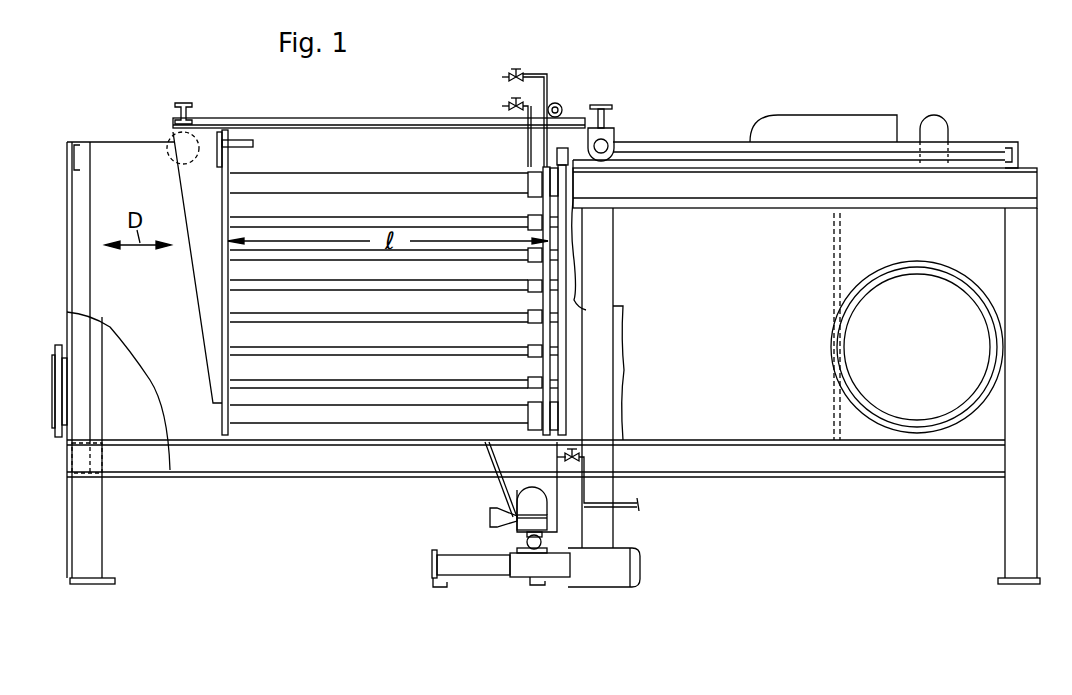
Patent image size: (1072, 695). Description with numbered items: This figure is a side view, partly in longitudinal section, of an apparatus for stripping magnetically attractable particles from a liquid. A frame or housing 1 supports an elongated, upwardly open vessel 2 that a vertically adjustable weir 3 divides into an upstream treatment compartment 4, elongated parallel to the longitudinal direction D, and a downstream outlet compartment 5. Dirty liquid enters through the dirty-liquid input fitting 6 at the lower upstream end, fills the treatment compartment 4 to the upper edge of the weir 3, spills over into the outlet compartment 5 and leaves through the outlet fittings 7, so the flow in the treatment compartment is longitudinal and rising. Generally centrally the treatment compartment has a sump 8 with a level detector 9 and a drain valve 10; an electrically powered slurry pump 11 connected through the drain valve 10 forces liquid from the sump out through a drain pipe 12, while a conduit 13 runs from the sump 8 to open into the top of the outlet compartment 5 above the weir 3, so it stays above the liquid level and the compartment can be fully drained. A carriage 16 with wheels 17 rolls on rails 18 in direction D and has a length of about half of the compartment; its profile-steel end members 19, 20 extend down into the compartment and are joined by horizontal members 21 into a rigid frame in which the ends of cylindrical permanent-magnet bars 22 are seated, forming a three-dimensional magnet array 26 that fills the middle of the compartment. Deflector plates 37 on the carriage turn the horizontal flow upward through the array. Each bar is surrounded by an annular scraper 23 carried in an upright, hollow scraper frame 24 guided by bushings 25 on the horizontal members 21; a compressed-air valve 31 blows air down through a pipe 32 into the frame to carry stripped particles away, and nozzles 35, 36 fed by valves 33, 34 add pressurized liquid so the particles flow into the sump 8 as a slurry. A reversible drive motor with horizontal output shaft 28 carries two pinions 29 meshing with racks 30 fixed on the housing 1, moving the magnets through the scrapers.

The frame or housing 1 is at (125, 463).
The vessel 2 is at (118, 165).
The weir 3 is at (833, 237).
The treatment compartment 4 is at (143, 289).
The outlet compartment 5 is at (910, 359).
The dirty-liquid input fitting 6 is at (58, 438).
The outlet fittings 7 is at (885, 415).
The sump 8 is at (498, 452).
The level detector 9 is at (490, 517).
The drain valve 10 is at (522, 538).
The slurry pump 11 is at (522, 567).
The drain pipe 12 is at (473, 567).
The conduit 13 is at (840, 132).
The carriage 16 is at (187, 115).
The wheels 17 is at (620, 147).
The rails 18 is at (684, 168).
The end member 19 is at (225, 438).
The end member 20 is at (563, 367).
The horizontal members 21 is at (267, 418).
The permanent-magnet bars 22 is at (317, 383).
The annular scrapers 23 is at (533, 327).
The scraper frame 24 is at (545, 302).
The bushings 25 is at (552, 407).
The magnet array 26 is at (383, 392).
The output shaft 28 is at (561, 103).
The pinions 29 is at (568, 112).
The racks 30 is at (318, 127).
The compressed-air valve 31 is at (502, 76).
The pipe 32 is at (546, 86).
The valve 33 is at (502, 104).
The valve 34 is at (572, 463).
The nozzle 35 is at (527, 167).
The nozzle 36 is at (553, 457).
The deflector plates 37 is at (197, 213).